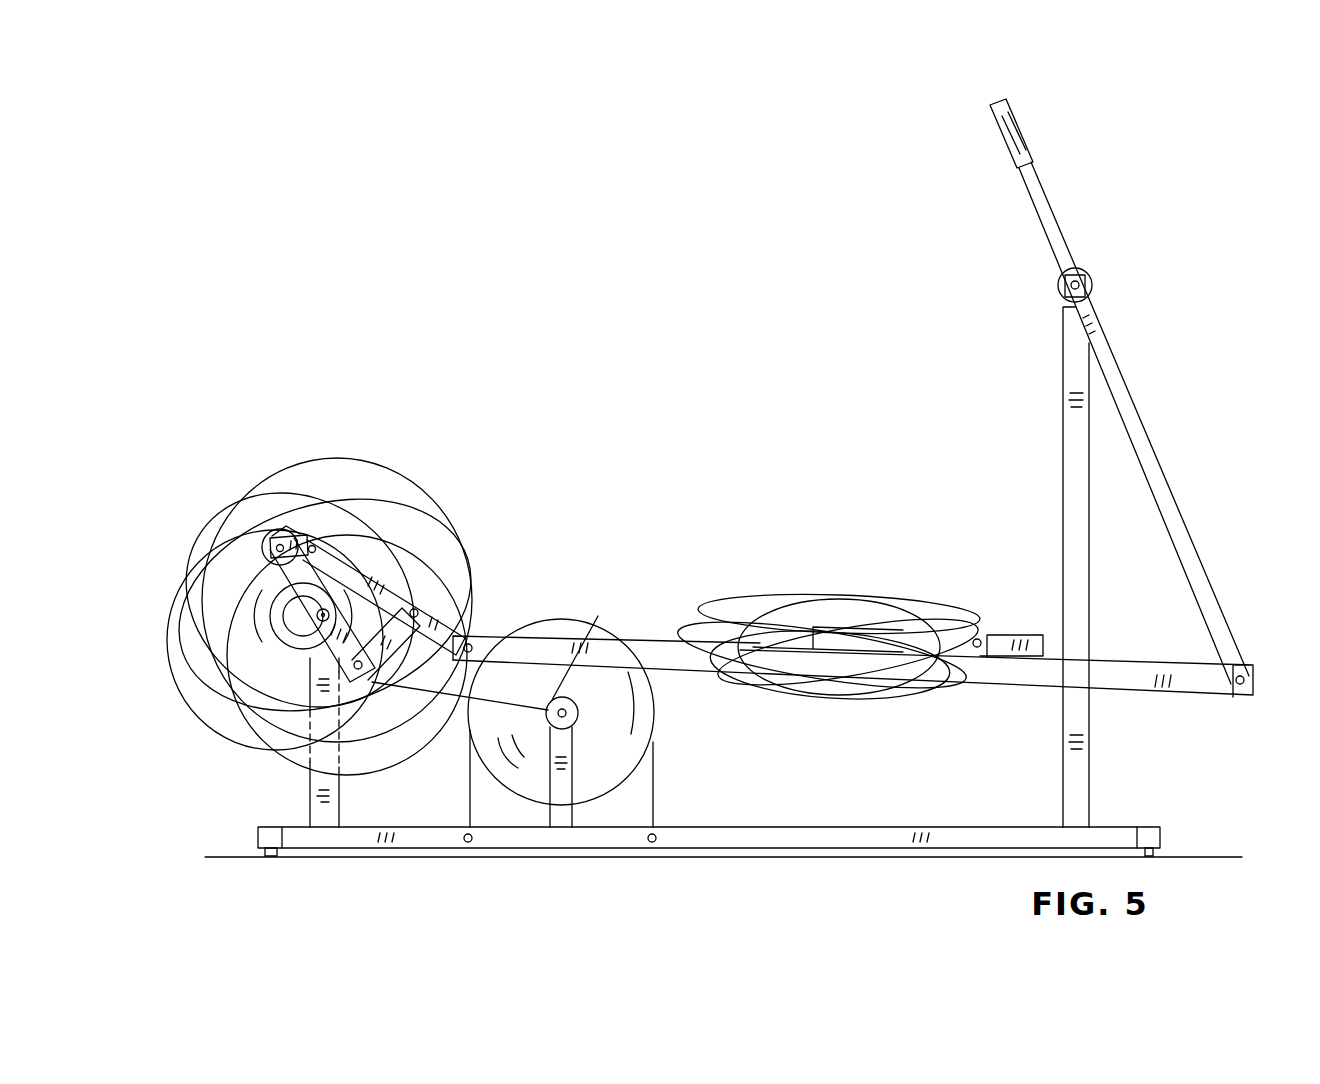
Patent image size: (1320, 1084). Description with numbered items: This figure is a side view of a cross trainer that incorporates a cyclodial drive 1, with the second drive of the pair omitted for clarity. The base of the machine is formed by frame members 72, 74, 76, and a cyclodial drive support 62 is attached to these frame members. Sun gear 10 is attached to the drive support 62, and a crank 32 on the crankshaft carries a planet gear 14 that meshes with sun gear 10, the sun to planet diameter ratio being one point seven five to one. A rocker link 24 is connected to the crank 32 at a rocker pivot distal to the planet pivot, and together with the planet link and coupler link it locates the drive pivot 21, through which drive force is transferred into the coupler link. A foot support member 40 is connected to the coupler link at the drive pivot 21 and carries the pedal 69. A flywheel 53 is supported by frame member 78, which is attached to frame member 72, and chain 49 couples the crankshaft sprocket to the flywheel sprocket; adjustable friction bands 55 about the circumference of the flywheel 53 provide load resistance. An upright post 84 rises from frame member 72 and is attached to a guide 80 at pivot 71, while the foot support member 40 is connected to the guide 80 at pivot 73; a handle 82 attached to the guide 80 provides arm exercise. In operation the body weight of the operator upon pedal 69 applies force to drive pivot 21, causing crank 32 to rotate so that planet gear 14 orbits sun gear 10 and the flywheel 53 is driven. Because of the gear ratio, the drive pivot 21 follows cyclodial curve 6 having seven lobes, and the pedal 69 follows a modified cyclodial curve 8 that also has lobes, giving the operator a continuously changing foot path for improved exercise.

The cyclodial drive 1 is at (430, 487).
The cyclodial curve 6 is at (337, 458).
The modified cyclodial curve 8 is at (760, 600).
The sun gear 10 is at (216, 680).
The planet gear 14 is at (262, 530).
The drive pivot 21 is at (478, 638).
The rocker link 24 is at (417, 722).
The crank 32 is at (262, 565).
The foot support member 40 is at (1195, 655).
The chain 49 is at (590, 622).
The flywheel 53 is at (538, 620).
The adjustable friction bands 55 is at (655, 778).
The cyclodial drive support 62 is at (341, 803).
The pedal 69 is at (1012, 632).
The pivot 71 is at (1095, 278).
The frame member 72 is at (790, 826).
The pivot 73 is at (1240, 698).
The frame member 74 is at (1150, 826).
The frame member 76 is at (268, 826).
The frame member 78 is at (575, 748).
The guide 80 is at (1153, 440).
The handle 82 is at (1030, 148).
The upright post 84 is at (1063, 378).